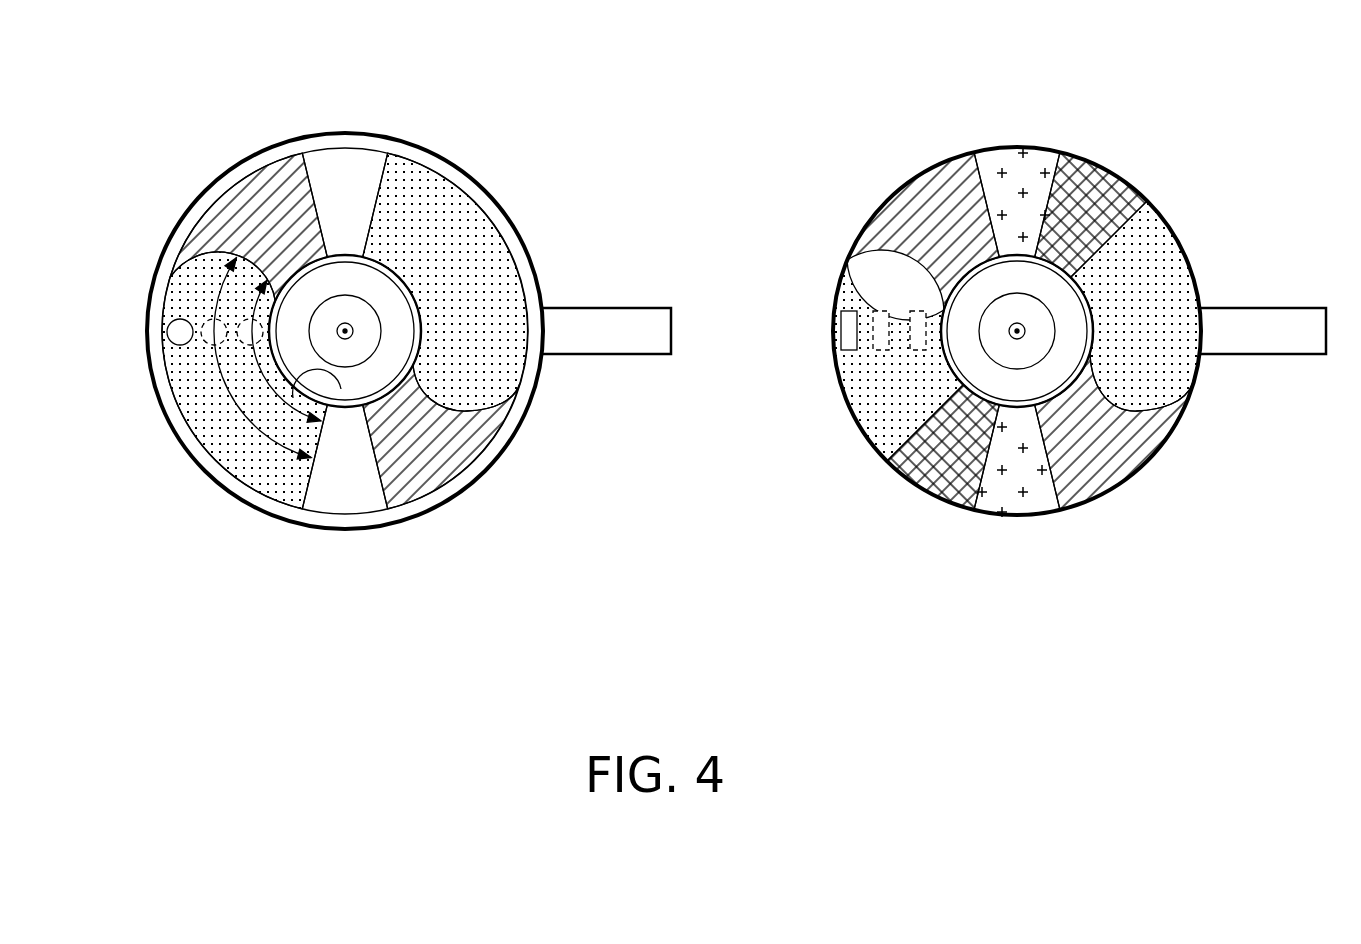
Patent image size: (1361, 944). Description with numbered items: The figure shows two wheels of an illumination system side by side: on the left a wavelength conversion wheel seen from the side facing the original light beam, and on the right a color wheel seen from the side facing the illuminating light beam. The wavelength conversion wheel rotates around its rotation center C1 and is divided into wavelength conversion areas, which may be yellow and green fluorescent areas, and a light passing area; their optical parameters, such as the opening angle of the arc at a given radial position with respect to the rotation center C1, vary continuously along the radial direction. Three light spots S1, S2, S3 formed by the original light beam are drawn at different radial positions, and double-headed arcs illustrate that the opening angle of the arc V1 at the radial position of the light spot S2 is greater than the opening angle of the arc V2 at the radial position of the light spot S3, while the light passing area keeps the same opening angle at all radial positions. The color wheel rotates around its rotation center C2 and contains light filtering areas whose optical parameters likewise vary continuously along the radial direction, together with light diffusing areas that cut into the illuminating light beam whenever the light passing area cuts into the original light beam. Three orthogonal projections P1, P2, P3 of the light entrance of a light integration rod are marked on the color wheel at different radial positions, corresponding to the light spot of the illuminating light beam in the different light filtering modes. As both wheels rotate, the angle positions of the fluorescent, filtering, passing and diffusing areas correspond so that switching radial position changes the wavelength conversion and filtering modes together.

The rotation center C1 is at (345, 331).
The light spot S1 is at (173, 343).
The light spot S2 is at (205, 318).
The light spot S3 is at (247, 318).
The arc V1 is at (212, 380).
The arc V2 is at (338, 400).
The rotation center C2 is at (1017, 331).
The orthogonal projection P1 is at (842, 350).
The orthogonal projection P2 is at (875, 318).
The orthogonal projection P3 is at (918, 310).